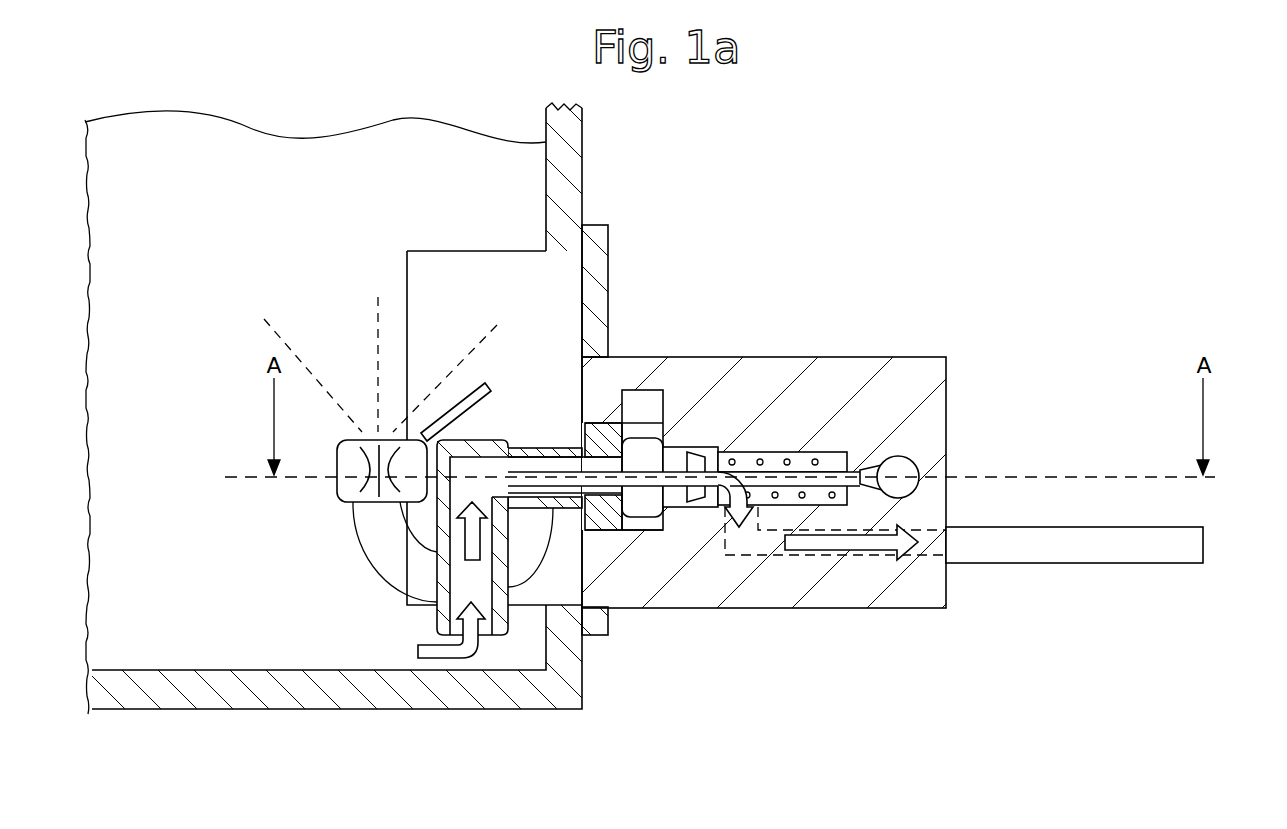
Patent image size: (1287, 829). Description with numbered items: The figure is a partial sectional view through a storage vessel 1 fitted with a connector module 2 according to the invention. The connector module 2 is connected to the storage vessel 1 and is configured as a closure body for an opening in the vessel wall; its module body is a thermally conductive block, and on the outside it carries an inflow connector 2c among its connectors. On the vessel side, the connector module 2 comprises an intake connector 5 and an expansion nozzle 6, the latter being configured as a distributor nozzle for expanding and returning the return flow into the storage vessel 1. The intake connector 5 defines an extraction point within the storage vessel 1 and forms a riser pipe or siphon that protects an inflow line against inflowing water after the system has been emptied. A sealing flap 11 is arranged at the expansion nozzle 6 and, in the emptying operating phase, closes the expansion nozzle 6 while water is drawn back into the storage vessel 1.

The storage vessel 1 is at (573, 180).
The connector module 2 is at (885, 357).
The inflow connector 2c is at (1018, 545).
The intake connector 5 is at (450, 618).
The expansion nozzle 6 is at (370, 466).
The sealing flap 11 is at (492, 388).